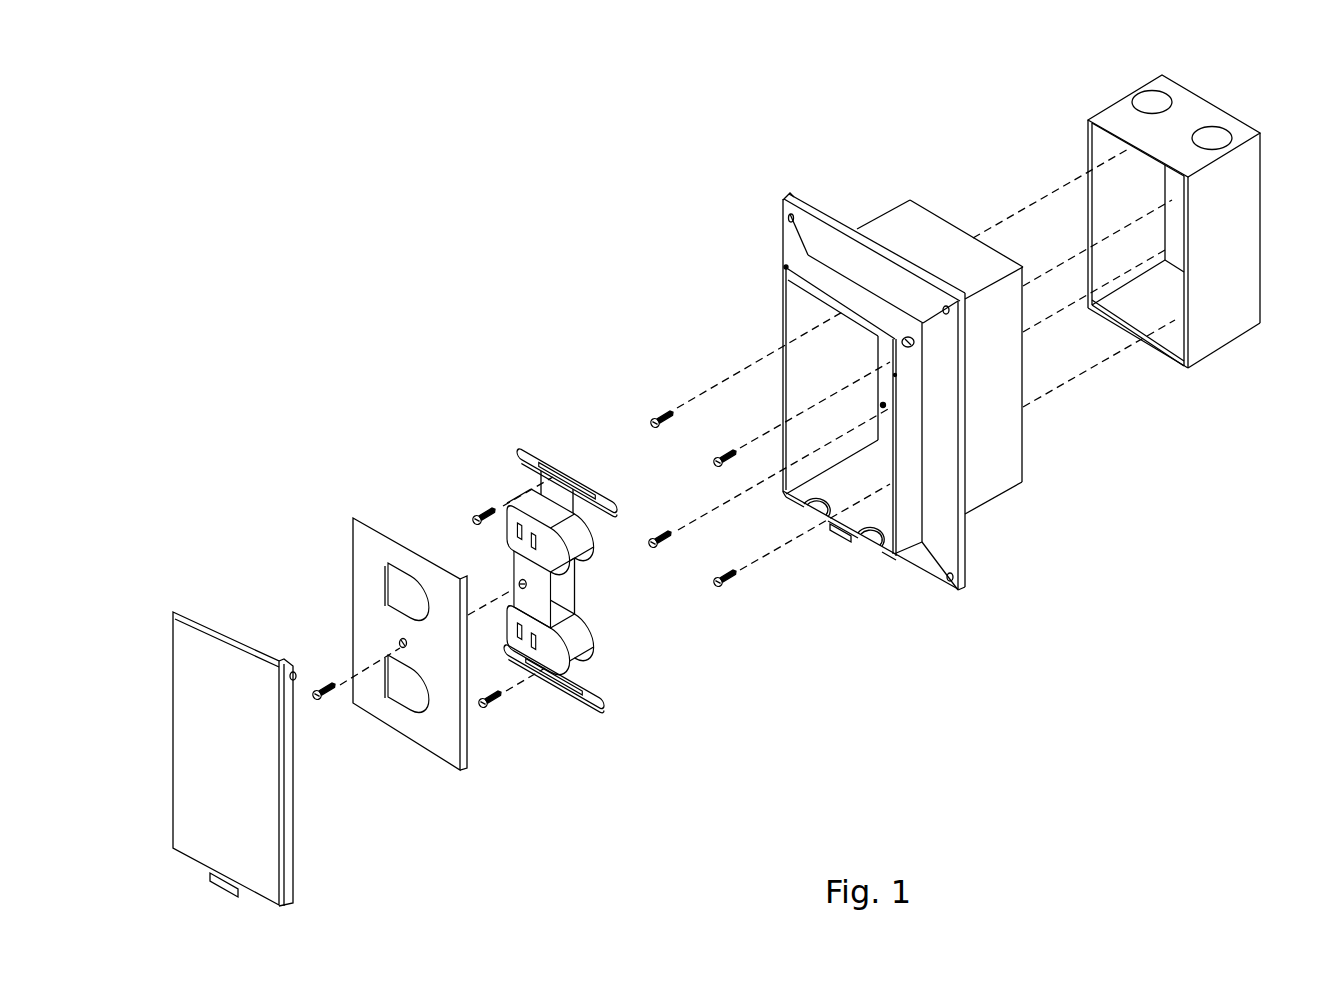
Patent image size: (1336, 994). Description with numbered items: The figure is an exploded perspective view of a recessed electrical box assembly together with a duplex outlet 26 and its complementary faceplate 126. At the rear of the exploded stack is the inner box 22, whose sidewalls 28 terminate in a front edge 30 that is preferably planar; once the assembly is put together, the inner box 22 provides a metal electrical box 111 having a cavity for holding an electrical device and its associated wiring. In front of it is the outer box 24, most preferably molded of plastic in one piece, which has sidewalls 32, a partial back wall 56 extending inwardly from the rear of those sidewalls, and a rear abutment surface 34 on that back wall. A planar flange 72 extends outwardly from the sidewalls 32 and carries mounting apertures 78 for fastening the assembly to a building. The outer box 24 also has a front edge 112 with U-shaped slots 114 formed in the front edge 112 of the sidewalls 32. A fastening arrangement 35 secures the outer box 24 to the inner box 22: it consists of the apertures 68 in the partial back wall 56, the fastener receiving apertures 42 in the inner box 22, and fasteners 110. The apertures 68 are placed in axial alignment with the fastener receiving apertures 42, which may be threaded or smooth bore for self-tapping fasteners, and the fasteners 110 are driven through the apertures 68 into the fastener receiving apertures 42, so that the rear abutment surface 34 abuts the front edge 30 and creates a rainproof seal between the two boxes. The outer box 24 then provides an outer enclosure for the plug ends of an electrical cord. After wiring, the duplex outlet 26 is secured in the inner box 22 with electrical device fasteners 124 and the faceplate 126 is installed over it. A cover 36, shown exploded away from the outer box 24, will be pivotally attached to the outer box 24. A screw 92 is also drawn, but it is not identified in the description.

The inner box 22 is at (1143, 231).
The outer box 24 is at (898, 401).
The duplex outlet 26 is at (490, 455).
The sidewalls 28 is at (1237, 257).
The front edge 30 is at (1182, 338).
The sidewalls 32 is at (855, 362).
The rear abutment surface 34 is at (1034, 455).
The fastening arrangement 35 is at (750, 592).
The cover 36 is at (249, 755).
The fastener receiving apertures 42 is at (1178, 245).
The partial back wall 56 is at (895, 375).
The apertures 68 is at (883, 405).
The flange 72 is at (952, 425).
The mounting apertures 78 is at (792, 215).
The cover plate screw 92 is at (297, 677).
The fasteners 110 is at (652, 422).
The metal electrical box 111 is at (1120, 188).
The front edge 112 is at (880, 551).
The U-shaped slots 114 is at (812, 505).
The electrical device fasteners 124 is at (475, 520).
The faceplate 126 is at (316, 515).